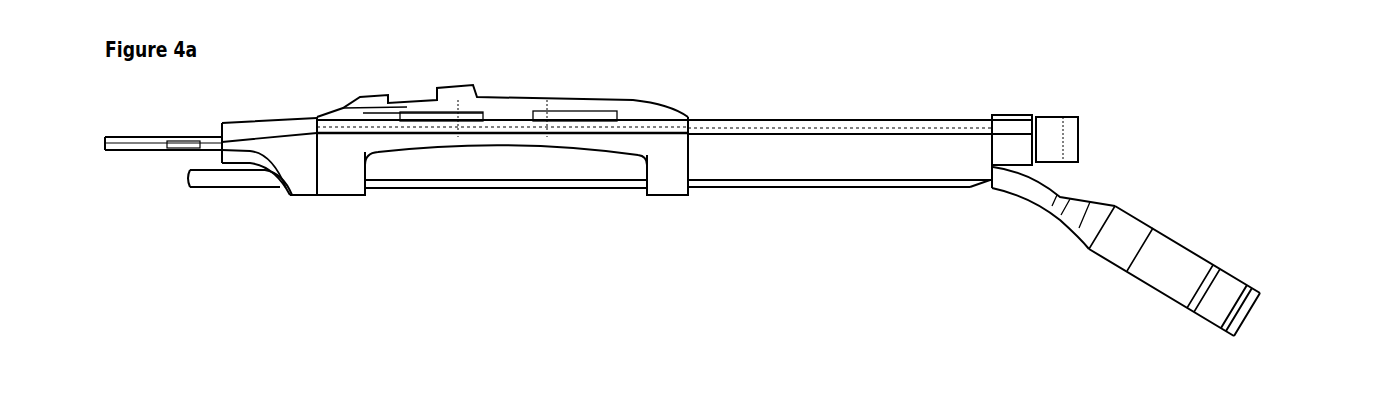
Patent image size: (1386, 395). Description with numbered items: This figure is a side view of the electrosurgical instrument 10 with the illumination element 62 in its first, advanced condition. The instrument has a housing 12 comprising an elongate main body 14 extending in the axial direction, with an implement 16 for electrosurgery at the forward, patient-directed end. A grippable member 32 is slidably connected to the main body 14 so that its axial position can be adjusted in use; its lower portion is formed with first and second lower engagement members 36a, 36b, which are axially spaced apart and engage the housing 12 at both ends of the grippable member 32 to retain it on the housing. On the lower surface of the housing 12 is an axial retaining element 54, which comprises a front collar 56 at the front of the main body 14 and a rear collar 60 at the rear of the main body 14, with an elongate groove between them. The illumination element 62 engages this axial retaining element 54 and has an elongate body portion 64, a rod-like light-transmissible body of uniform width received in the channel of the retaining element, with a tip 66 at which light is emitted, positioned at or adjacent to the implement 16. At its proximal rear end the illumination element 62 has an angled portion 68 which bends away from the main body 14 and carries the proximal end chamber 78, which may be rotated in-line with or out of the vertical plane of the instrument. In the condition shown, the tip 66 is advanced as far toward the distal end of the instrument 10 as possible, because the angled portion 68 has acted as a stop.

The electrosurgical instrument 10 is at (1176, 88).
The housing 12 is at (836, 81).
The elongate main body 14 is at (736, 110).
The implement 16 is at (95, 138).
The grippable member 32 is at (336, 100).
The first lower engagement member 36a is at (343, 203).
The second lower engagement member 36b is at (670, 203).
The axial retaining element 54 is at (730, 193).
The front collar 56 is at (303, 207).
The rear collar 60 is at (984, 199).
The illumination element 62 is at (1248, 216).
The elongate body portion 64 is at (541, 202).
The tip 66 is at (176, 184).
The angled portion 68 is at (1047, 185).
The proximal end chamber 78 is at (1270, 300).